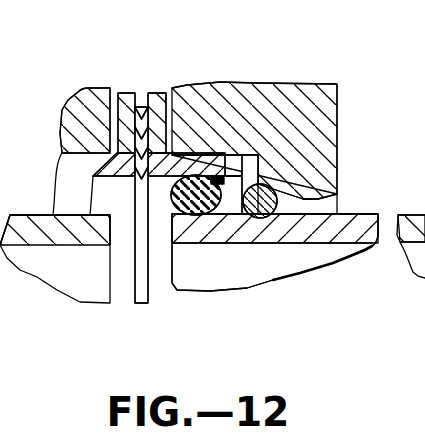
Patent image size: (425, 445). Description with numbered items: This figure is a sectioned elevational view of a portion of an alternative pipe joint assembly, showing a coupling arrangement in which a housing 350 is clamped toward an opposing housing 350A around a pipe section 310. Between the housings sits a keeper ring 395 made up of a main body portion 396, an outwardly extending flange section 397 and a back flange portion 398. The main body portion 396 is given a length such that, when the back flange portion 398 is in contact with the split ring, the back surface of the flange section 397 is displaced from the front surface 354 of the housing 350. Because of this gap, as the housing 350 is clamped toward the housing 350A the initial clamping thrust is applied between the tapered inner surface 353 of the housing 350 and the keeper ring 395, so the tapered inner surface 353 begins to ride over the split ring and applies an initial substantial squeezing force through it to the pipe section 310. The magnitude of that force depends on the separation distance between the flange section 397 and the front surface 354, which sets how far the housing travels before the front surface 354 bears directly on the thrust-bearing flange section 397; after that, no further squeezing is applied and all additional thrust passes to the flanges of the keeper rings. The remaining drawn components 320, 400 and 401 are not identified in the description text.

The pipe section 310 is at (357, 213).
The O-ring seal 320 is at (270, 218).
The housing 350 is at (338, 106).
The housing 350A is at (77, 100).
The tapered inner surface 353 is at (304, 199).
The front surface 354 is at (167, 93).
The keeper ring 395 is at (203, 151).
The main body portion 396 is at (181, 158).
The outwardly extending flange section 397 is at (153, 93).
The back flange portion 398 is at (237, 182).
The shaft 400 is at (137, 194).
The O-ring seal 401 is at (203, 217).